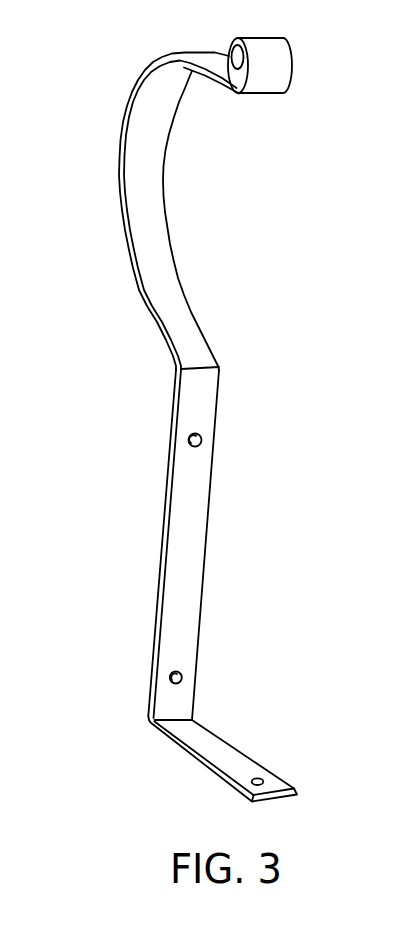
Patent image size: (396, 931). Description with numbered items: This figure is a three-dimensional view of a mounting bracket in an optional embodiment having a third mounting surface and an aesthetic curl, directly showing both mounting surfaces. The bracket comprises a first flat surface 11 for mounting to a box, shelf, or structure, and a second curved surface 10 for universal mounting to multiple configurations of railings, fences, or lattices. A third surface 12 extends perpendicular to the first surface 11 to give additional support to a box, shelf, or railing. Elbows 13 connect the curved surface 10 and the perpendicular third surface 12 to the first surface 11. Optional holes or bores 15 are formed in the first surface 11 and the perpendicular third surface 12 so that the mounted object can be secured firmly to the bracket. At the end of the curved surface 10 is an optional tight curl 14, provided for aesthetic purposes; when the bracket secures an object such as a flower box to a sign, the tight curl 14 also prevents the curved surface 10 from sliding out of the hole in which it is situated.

The second curved surface 10 is at (120, 178).
The first flat surface 11 is at (207, 557).
The third surface 12 is at (183, 755).
The elbows 13 is at (220, 370).
The tight curl 14 is at (295, 70).
The holes or bores 15 is at (203, 440).